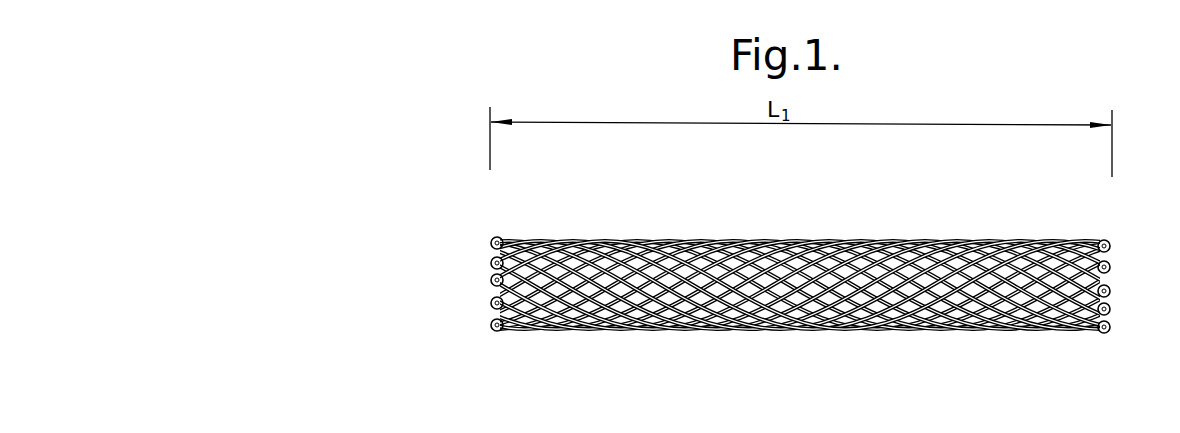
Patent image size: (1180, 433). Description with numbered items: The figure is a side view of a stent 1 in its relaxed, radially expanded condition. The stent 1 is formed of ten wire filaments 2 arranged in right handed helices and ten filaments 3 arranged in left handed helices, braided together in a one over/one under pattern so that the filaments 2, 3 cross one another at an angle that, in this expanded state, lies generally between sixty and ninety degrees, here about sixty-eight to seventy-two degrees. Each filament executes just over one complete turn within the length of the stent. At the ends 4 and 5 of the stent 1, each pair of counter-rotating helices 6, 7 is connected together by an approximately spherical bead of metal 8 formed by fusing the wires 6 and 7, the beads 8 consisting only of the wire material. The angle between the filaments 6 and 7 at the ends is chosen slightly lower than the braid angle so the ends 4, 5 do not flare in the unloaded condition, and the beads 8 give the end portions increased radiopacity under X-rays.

The stent 1 is at (608, 309).
The wire filaments 2 is at (546, 318).
The filaments 3 is at (724, 315).
The end of the stent 4 is at (473, 273).
The end of the stent 5 is at (1122, 280).
The counter-rotating helix 6 is at (491, 288).
The counter-rotating helix 7 is at (488, 320).
The spherical bead of metal 8 is at (492, 305).